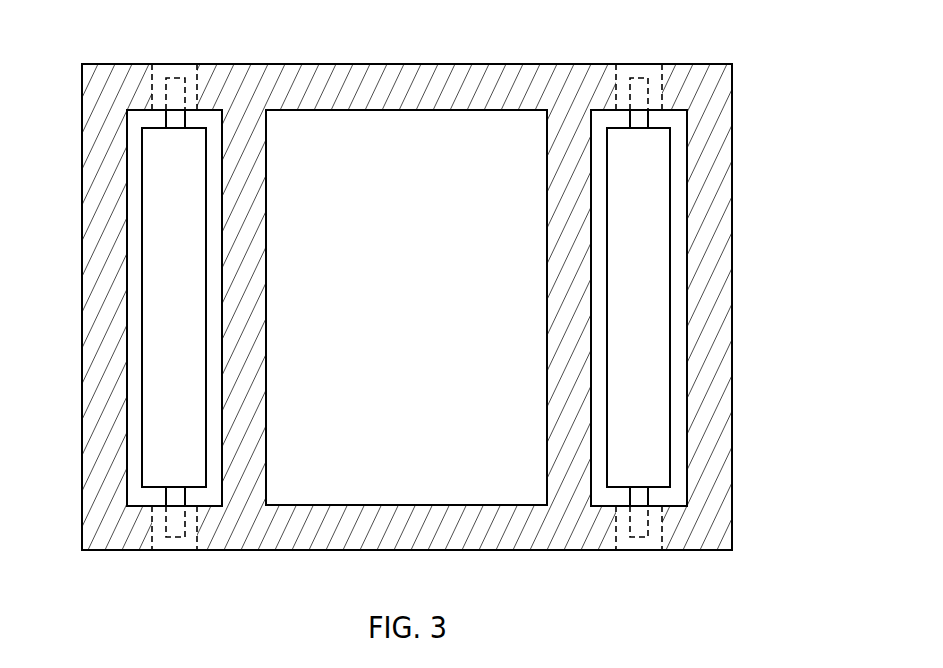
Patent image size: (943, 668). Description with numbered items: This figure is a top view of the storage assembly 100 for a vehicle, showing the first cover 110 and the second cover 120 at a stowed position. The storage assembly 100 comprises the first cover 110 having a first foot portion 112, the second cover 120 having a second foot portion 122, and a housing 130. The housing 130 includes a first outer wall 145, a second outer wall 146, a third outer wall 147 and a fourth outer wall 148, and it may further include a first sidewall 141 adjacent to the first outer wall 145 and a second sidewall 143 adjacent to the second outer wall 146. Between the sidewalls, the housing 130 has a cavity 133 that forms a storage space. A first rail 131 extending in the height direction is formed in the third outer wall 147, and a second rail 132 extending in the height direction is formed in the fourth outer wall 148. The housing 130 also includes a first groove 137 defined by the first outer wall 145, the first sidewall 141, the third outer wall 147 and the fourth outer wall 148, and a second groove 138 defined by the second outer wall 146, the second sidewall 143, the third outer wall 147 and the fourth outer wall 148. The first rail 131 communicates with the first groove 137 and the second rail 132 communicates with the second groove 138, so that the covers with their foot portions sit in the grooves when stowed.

The storage assembly 100 is at (773, 70).
The first cover 110 is at (149, 232).
The first foot portion 112 is at (165, 120).
The second cover 120 is at (666, 232).
The second foot portion 122 is at (648, 120).
The housing 130 is at (79, 311).
The first rail 131 is at (198, 80).
The second rail 132 is at (616, 80).
The cavity 133 is at (422, 307).
The first groove 137 is at (135, 437).
The second groove 138 is at (594, 462).
The first sidewall 141 is at (250, 395).
The second sidewall 143 is at (565, 395).
The first outer wall 145 is at (103, 385).
The second outer wall 146 is at (710, 385).
The third outer wall 147 is at (405, 100).
The fourth outer wall 148 is at (410, 520).